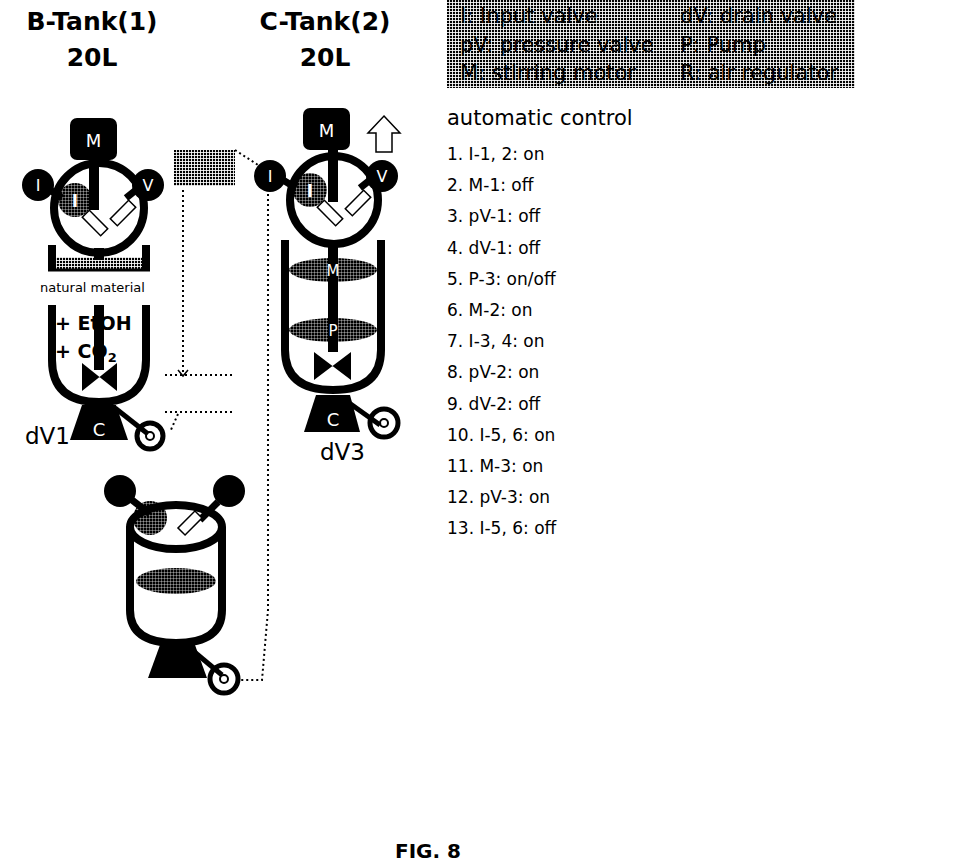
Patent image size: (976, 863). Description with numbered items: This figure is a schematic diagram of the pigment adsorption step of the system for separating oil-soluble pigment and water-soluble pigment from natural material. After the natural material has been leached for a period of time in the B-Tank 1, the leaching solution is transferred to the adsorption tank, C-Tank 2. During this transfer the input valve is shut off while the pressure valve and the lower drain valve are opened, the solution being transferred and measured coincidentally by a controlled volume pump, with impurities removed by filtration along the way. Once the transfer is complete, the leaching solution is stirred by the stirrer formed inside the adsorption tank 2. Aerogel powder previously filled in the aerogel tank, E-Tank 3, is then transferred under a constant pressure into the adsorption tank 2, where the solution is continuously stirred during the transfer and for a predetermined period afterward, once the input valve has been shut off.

The B-Tank 1 is at (208, 291).
The adsorption tank 2 is at (267, 437).
The aerogel tank 3 is at (143, 626).